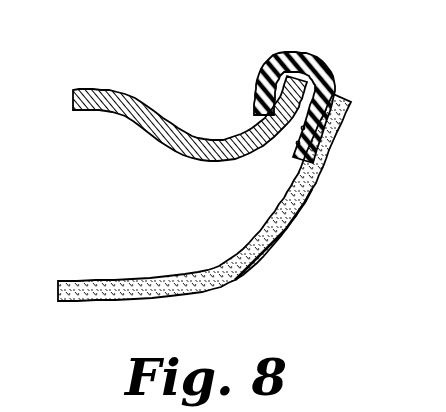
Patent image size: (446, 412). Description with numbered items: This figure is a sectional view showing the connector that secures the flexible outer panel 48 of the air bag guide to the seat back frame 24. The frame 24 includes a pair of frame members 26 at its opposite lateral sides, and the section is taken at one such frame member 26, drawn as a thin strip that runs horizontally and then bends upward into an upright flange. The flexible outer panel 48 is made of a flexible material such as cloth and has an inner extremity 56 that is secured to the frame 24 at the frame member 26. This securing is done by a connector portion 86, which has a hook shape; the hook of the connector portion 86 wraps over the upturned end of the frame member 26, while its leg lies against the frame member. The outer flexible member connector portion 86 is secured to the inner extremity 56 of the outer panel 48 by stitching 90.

The frame 24 is at (221, 189).
The frame member 26 is at (121, 88).
The outer panel 48 is at (221, 221).
The inner extremity 56 is at (225, 197).
The connector portion 86 is at (322, 62).
The stitching 90 is at (352, 100).